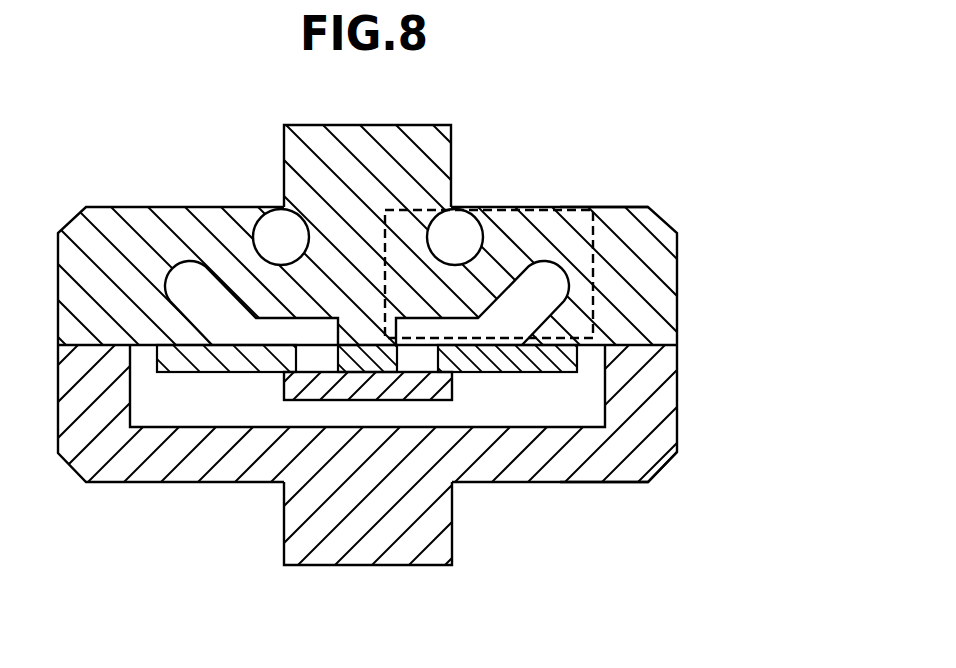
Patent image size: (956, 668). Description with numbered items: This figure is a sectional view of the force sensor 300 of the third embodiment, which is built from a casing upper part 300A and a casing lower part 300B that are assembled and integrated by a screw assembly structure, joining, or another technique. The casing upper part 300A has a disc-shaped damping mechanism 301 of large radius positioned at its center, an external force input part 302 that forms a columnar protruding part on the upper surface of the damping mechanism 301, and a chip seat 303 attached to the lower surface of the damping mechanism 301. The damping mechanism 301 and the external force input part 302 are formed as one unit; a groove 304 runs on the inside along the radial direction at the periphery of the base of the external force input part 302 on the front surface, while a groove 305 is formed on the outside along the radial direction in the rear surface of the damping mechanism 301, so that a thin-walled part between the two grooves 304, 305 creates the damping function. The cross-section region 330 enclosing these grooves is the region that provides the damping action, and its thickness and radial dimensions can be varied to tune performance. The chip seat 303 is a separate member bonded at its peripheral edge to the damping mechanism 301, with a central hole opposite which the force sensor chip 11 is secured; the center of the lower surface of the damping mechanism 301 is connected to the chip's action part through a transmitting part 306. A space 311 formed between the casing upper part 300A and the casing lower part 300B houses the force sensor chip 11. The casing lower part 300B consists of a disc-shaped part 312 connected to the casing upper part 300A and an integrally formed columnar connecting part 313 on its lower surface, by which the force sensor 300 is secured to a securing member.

The force sensor 300 is at (666, 221).
The casing upper part 300A is at (680, 267).
The casing lower part 300B is at (680, 403).
The damping mechanism 301 is at (622, 212).
The external force input part 302 is at (303, 150).
The chip seat 303 is at (188, 363).
The groove 304 is at (493, 228).
The groove 305 is at (545, 300).
The transmitting part 306 is at (358, 363).
The space 311 is at (550, 408).
The disc-shaped part 312 is at (643, 462).
The connecting part 313 is at (433, 547).
The cross-section region 330 is at (575, 208).
The force sensor chip 11 is at (433, 392).